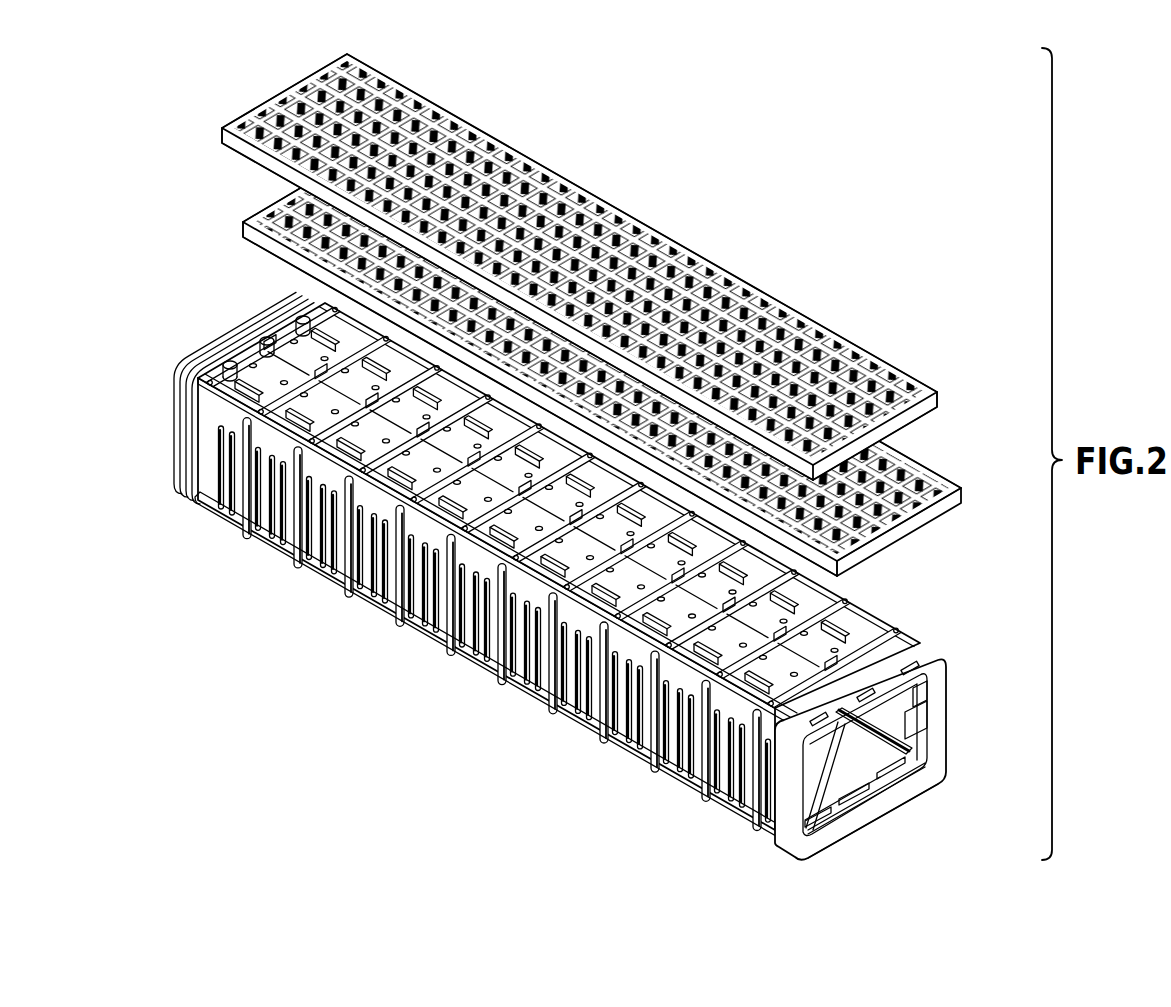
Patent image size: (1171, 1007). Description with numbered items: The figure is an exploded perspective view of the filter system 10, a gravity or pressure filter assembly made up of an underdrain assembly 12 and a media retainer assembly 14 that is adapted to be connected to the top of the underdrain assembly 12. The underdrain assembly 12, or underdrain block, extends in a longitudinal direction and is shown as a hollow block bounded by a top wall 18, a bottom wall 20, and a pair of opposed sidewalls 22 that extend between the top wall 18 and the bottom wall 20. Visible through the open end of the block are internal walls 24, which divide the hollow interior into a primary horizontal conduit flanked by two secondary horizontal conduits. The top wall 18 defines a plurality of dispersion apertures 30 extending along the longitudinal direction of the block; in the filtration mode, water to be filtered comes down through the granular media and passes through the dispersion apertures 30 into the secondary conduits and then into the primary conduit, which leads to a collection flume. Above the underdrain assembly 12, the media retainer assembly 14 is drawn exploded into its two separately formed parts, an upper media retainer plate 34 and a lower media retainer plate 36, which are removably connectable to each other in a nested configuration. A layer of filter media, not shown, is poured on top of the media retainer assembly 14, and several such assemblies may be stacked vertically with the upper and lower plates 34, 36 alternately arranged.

The filter system 10 is at (590, 456).
The underdrain assembly 12 is at (485, 617).
The media retainer assembly 14 is at (614, 316).
The top wall 18 is at (870, 727).
The bottom wall 20 is at (880, 818).
The sidewalls 22 is at (787, 800).
The internal walls 24 is at (885, 738).
The dispersion apertures 30 is at (828, 620).
The upper media retainer plate 34 is at (960, 52).
The lower media retainer plate 36 is at (886, 554).